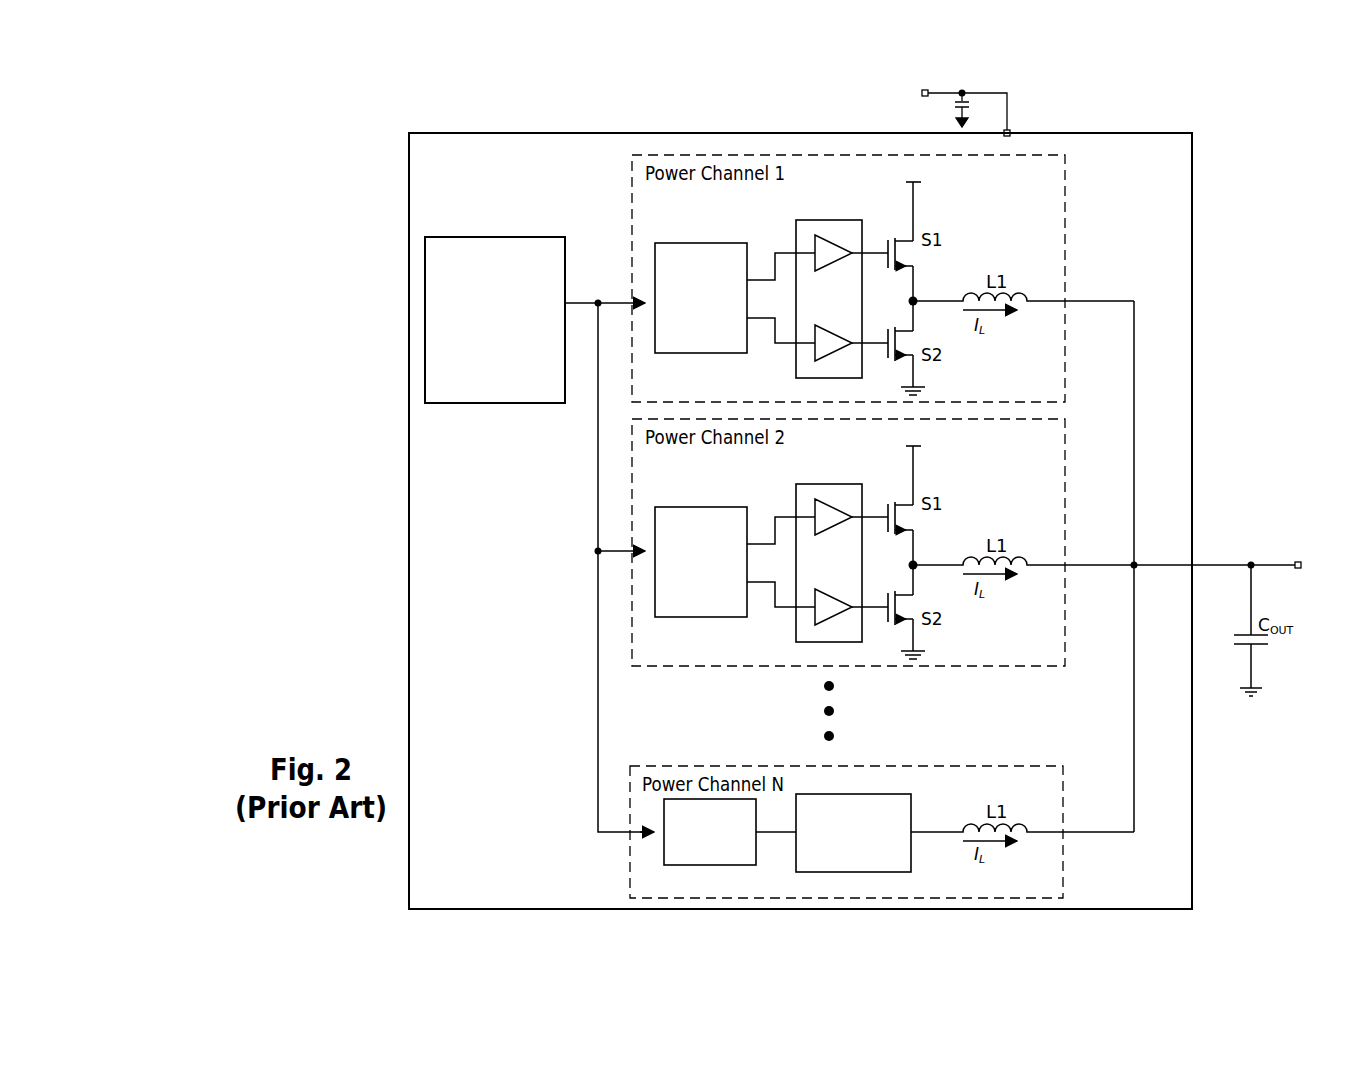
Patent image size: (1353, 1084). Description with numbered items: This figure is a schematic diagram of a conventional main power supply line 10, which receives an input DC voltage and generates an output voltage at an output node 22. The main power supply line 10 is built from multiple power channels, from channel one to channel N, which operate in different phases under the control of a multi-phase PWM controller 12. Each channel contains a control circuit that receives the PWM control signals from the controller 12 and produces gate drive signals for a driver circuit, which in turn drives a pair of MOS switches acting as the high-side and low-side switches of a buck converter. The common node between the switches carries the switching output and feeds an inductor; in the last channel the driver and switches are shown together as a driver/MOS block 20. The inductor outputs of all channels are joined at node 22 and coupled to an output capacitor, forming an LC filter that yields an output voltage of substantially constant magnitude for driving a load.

The main power supply line 10 is at (719, 133).
The multi-phase PWM controller 12 is at (513, 403).
The driver/MOS 20 is at (870, 872).
The output voltage node 22 is at (1265, 563).